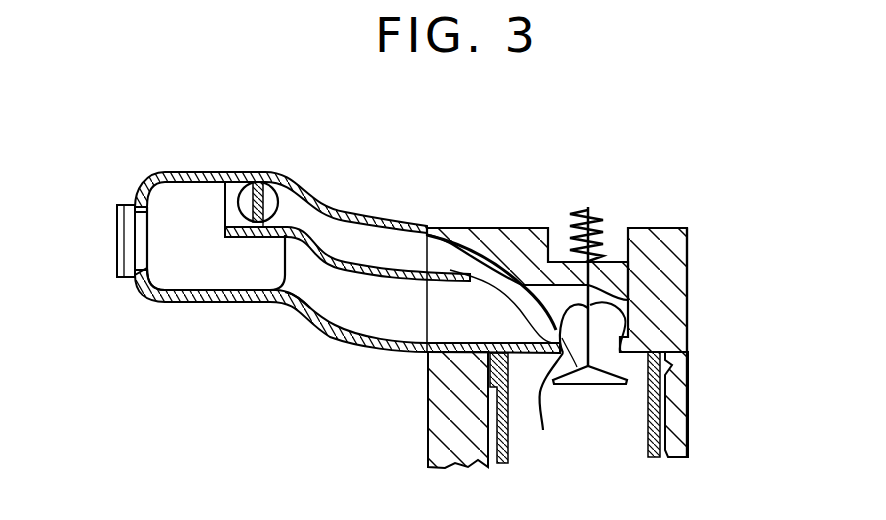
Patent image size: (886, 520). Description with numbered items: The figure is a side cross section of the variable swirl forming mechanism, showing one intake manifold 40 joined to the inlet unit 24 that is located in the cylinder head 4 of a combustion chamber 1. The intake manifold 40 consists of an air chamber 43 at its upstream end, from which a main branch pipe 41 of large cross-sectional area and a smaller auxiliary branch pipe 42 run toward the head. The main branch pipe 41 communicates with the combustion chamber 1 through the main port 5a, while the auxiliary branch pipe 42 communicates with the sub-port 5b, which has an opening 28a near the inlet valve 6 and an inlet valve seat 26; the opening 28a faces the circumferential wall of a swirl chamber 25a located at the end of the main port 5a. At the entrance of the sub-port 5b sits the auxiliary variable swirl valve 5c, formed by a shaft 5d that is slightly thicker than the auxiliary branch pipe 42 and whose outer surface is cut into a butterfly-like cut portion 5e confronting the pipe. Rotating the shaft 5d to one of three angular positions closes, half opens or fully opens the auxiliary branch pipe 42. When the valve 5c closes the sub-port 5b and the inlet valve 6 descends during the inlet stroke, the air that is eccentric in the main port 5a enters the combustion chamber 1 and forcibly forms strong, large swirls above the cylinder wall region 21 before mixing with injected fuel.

The combustion chamber 1 is at (628, 433).
The cylinder head 4 is at (689, 253).
The main port 5a is at (430, 354).
The sub-port 5b is at (465, 257).
The auxiliary variable swirl valve 5c is at (239, 213).
The shaft 5d is at (244, 182).
The cut portion 5e is at (283, 200).
The inlet valve 6 is at (647, 252).
The cylinder bore wall 21 is at (663, 372).
The inlet unit 24 is at (434, 225).
The swirl chamber 25a is at (612, 315).
The inlet valve seat 26 is at (559, 383).
The opening 28a is at (577, 384).
The intake manifold 40 is at (275, 306).
The main branch pipe 41 is at (380, 318).
The auxiliary branch pipe 42 is at (362, 244).
The air chamber 43 is at (193, 272).